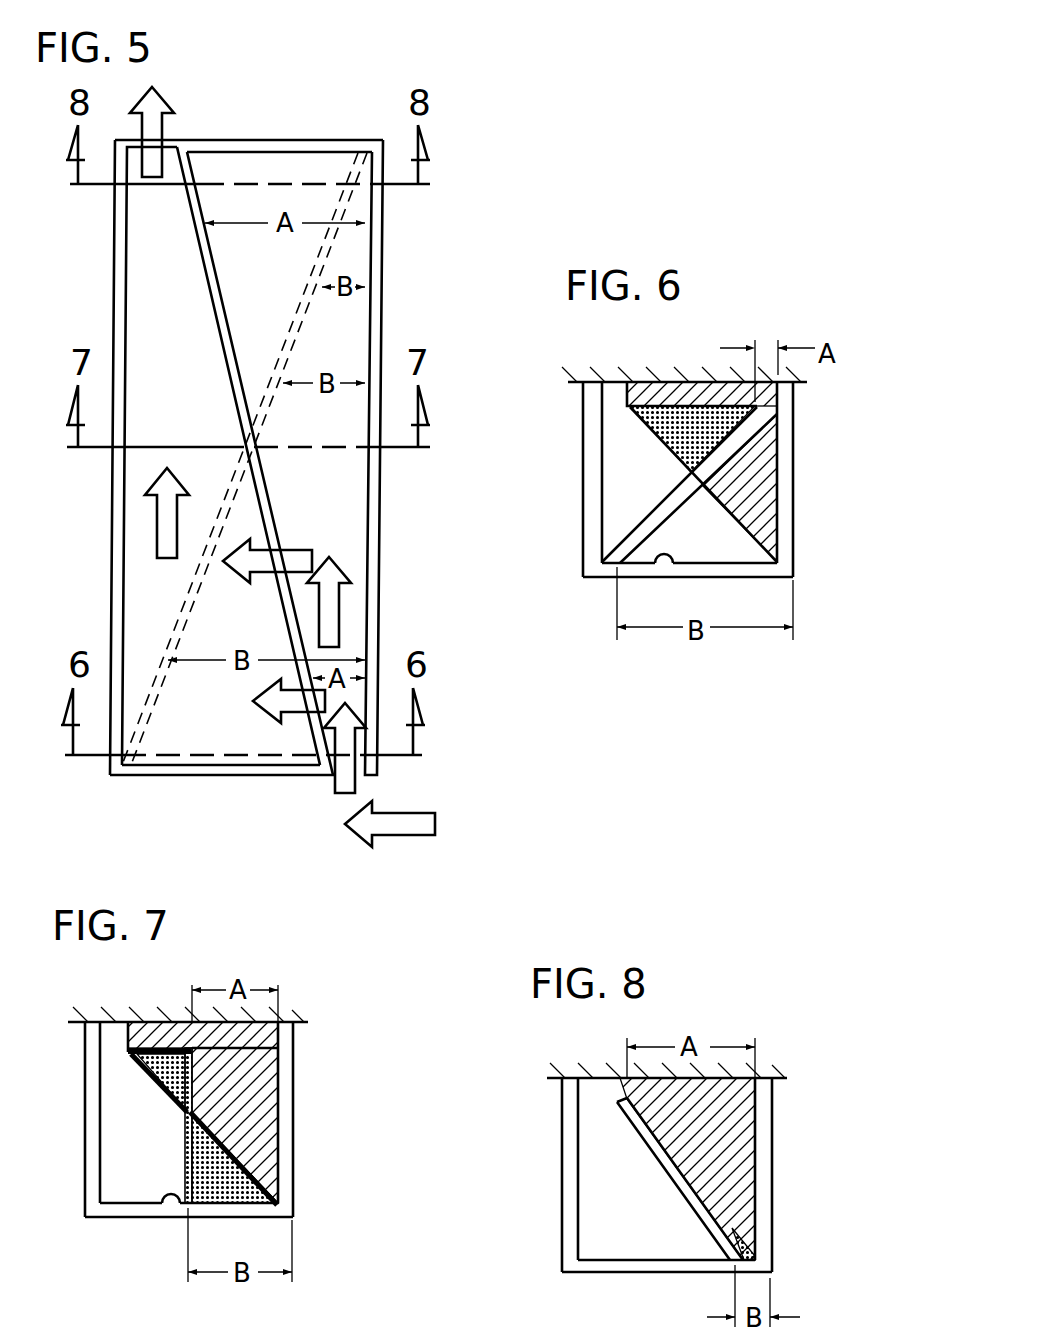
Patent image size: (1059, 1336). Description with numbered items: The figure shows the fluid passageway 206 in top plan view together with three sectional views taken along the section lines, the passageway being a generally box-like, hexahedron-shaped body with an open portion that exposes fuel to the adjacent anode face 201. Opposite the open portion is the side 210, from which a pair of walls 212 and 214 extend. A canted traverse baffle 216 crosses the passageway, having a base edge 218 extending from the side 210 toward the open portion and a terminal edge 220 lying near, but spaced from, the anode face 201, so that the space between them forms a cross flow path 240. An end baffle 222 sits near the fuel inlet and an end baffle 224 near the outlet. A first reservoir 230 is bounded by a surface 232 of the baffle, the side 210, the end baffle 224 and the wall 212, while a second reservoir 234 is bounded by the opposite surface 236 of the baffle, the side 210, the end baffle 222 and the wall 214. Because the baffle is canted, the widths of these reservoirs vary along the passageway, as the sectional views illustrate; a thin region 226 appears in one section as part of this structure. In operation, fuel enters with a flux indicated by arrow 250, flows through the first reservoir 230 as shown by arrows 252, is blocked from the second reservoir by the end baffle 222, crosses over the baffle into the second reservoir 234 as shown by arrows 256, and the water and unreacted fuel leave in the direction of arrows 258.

In FIG. 6, the anode face 201 is at (806, 383).
In FIG. 7, the anode face 201 is at (302, 1023).
In FIG. 8, the anode face 201 is at (550, 1082).
In FIG. 5, the fluid passageway 206 is at (250, 479).
In FIG. 6, the fluid passageway 206 is at (702, 500).
In FIG. 7, the fluid passageway 206 is at (196, 1147).
In FIG. 8, the fluid passageway 206 is at (648, 1198).
In FIG. 5, the side 210 is at (351, 260).
In FIG. 6, the side 210 is at (657, 567).
In FIG. 8, the side 210 is at (607, 1259).
In FIG. 5, the wall 212 is at (383, 313).
In FIG. 6, the wall 212 is at (795, 518).
In FIG. 7, the wall 212 is at (297, 1118).
In FIG. 8, the wall 212 is at (772, 1118).
In FIG. 5, the wall 214 is at (114, 315).
In FIG. 6, the wall 214 is at (585, 470).
In FIG. 7, the wall 214 is at (85, 1117).
In FIG. 8, the wall 214 is at (560, 1243).
In FIG. 5, the traverse baffle 216 is at (233, 395).
In FIG. 6, the traverse baffle 216 is at (657, 508).
In FIG. 7, the traverse baffle 216 is at (185, 1155).
In FIG. 8, the traverse baffle 216 is at (688, 1207).
In FIG. 7, the base edge 218 is at (162, 1203).
In FIG. 8, the base edge 218 is at (707, 1253).
In FIG. 5, the terminal edge 220 is at (217, 307).
In FIG. 6, the terminal edge 220 is at (774, 413).
In FIG. 7, the terminal edge 220 is at (161, 1125).
In FIG. 8, the terminal edge 220 is at (603, 1101).
In FIG. 5, the end baffle 222 is at (170, 777).
In FIG. 6, the end baffle 224 is at (768, 531).
In FIG. 7, the end baffle 224 is at (265, 1035).
In FIG. 8, the end baffle 224 is at (731, 1105).
In FIG. 7, the boundary 226 is at (198, 1047).
In FIG. 5, the first reservoir 230 is at (338, 440).
In FIG. 6, the first reservoir 230 is at (763, 496).
In FIG. 7, the first reservoir 230 is at (248, 1110).
In FIG. 8, the first reservoir 230 is at (717, 1140).
In FIG. 5, the surface 232 is at (213, 251).
In FIG. 6, the surface 232 is at (707, 548).
In FIG. 7, the surface 232 is at (233, 1190).
In FIG. 8, the surface 232 is at (731, 1238).
In FIG. 5, the second reservoir 234 is at (195, 381).
In FIG. 6, the second reservoir 234 is at (652, 458).
In FIG. 7, the second reservoir 234 is at (153, 1133).
In FIG. 8, the second reservoir 234 is at (637, 1193).
In FIG. 5, the surface 236 is at (203, 275).
In FIG. 6, the surface 236 is at (683, 423).
In FIG. 7, the surface 236 is at (143, 1073).
In FIG. 8, the surface 236 is at (622, 1121).
In FIG. 6, the cross flow path 240 is at (722, 392).
In FIG. 7, the cross flow path 240 is at (208, 1035).
In FIG. 8, the cross flow path 240 is at (647, 1090).
In FIG. 5, the arrow 250 is at (425, 822).
In FIG. 5, the arrows 252 is at (331, 578).
In FIG. 5, the arrows 256 is at (307, 557).
In FIG. 5, the arrows 258 is at (167, 98).